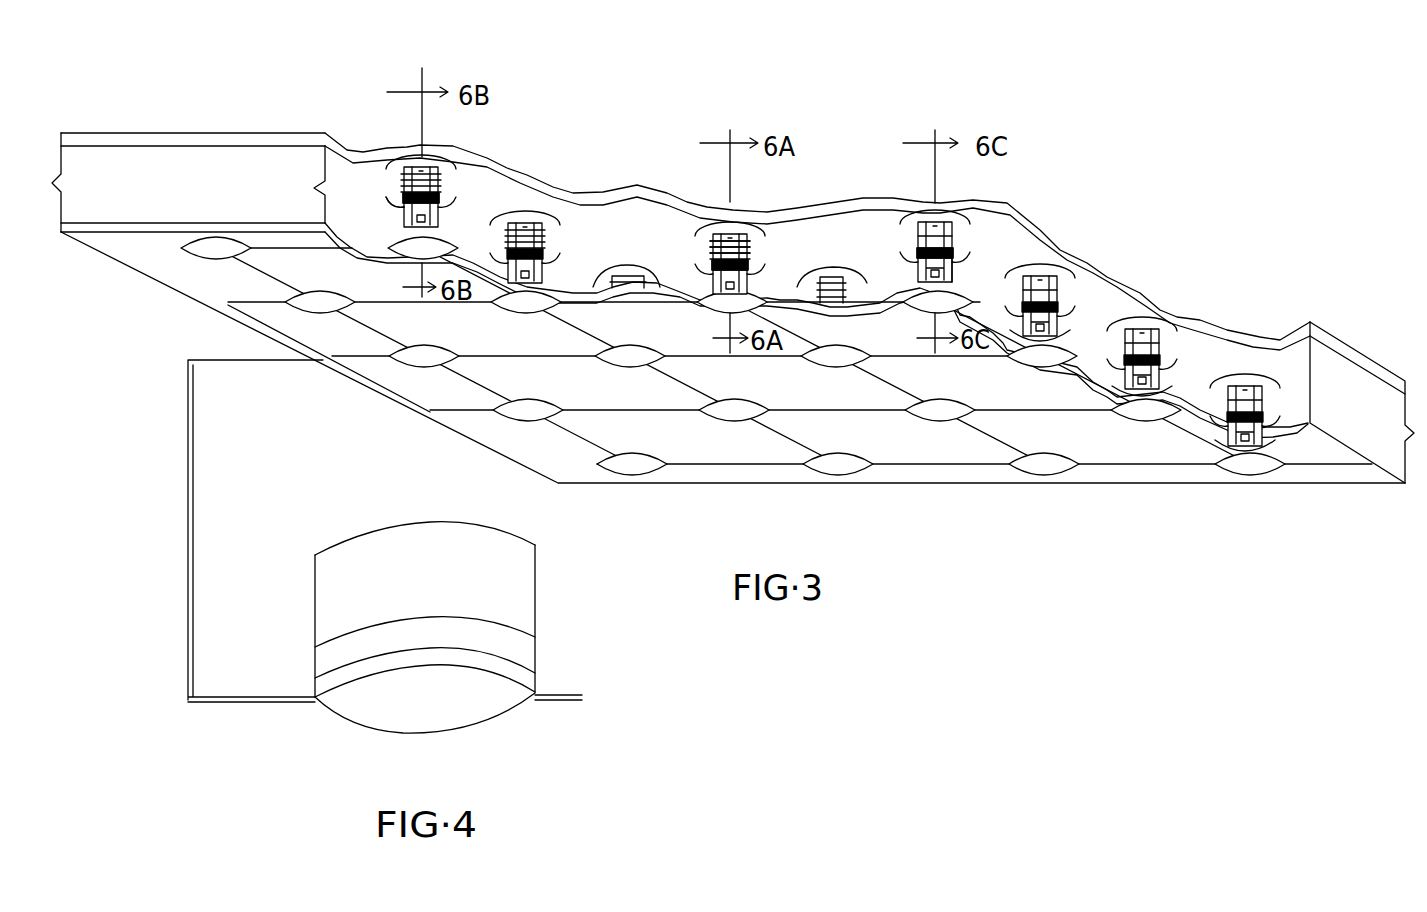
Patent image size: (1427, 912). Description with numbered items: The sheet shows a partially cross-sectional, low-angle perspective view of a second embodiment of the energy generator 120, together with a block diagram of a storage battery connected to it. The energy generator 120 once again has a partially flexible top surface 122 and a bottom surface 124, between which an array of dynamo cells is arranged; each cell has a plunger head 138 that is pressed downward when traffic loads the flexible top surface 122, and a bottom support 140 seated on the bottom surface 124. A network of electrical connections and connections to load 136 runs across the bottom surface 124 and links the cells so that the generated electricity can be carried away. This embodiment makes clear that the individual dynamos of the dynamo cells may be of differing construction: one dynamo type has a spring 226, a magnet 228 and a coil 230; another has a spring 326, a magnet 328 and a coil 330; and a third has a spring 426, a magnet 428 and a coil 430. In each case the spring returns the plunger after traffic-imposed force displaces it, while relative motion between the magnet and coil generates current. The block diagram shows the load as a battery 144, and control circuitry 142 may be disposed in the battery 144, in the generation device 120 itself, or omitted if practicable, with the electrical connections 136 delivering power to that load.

In FIG. 3, the energy generator 120 is at (530, 171).
In FIG. 3, the partially flexible top surface 122 is at (150, 136).
In FIG. 3, the bottom surface 124 is at (1090, 447).
In FIG. 3, the electrical connection 136 is at (522, 360).
In FIG. 4, the electrical connection 136 is at (217, 363).
In FIG. 3, the plunger head 138 is at (1137, 316).
In FIG. 3, the bottom support 140 is at (935, 417).
In FIG. 4, the control circuitry 142 is at (403, 718).
In FIG. 4, the battery 144 is at (362, 583).
In FIG. 3, the spring 226 is at (727, 228).
In FIG. 3, the magnet 228 is at (713, 236).
In FIG. 3, the coil 230 is at (748, 255).
In FIG. 3, the spring 326 is at (402, 187).
In FIG. 3, the magnet 328 is at (403, 209).
In FIG. 3, the coil 330 is at (439, 205).
In FIG. 3, the spring 426 is at (960, 273).
In FIG. 3, the magnet 428 is at (930, 237).
In FIG. 3, the coil 430 is at (918, 250).